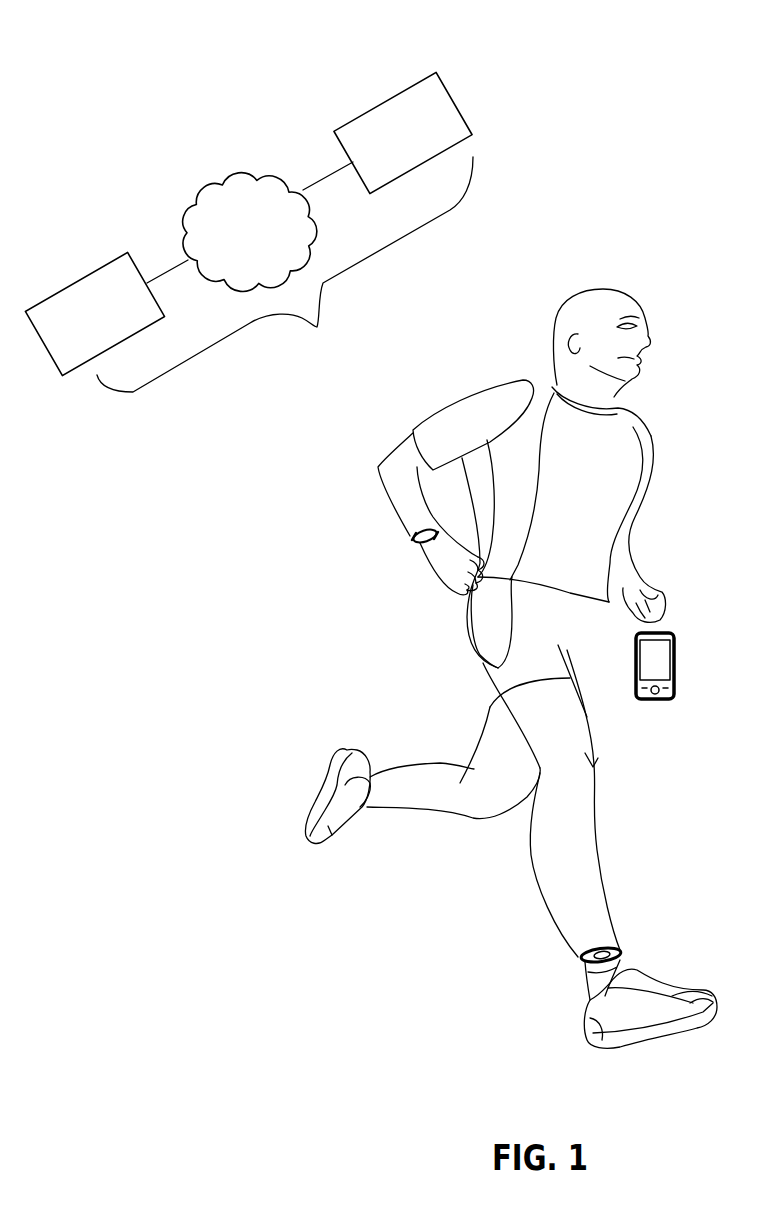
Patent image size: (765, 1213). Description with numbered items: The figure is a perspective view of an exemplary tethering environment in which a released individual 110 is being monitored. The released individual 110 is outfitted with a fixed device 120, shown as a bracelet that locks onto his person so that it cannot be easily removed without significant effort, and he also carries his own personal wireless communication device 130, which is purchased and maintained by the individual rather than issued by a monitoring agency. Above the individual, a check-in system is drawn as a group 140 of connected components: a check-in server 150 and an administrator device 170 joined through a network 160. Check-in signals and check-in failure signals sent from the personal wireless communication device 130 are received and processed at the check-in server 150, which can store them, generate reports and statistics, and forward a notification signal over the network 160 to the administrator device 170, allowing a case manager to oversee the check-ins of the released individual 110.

The released individual 110 is at (652, 433).
The fixed device 120 is at (581, 958).
The personal wireless communication device 130 is at (676, 648).
The remote systems 140 is at (285, 274).
The check-in server 150 is at (78, 281).
The network 160 is at (225, 177).
The administrator device 170 is at (390, 99).